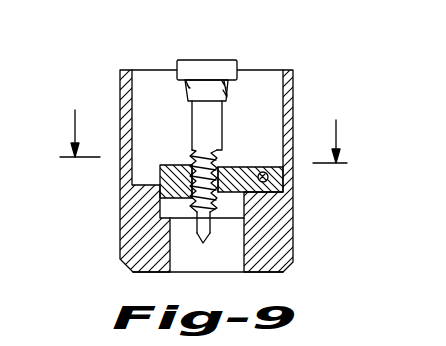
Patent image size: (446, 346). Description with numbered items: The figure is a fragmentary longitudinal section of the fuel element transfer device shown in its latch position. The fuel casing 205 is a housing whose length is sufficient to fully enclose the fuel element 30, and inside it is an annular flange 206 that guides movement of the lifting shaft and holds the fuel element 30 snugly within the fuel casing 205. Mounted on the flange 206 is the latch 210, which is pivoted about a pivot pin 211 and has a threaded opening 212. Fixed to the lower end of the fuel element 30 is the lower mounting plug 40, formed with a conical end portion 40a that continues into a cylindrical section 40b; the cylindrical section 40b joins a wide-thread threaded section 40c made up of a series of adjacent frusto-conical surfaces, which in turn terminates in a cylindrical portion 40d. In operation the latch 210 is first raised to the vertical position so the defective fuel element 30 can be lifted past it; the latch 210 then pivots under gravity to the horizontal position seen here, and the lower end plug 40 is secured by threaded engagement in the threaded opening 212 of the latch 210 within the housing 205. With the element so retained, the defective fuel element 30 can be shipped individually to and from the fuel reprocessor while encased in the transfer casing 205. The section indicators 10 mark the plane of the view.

The section viewing direction arrows 10 is at (202, 136).
The fuel element 30 is at (205, 68).
The lower mounting plug 40 is at (171, 169).
The conical end portion 40a is at (198, 240).
The cylindrical section 40b is at (209, 226).
The threaded section 40c is at (160, 199).
The cylindrical portion 40d is at (223, 131).
The fuel casing 205 is at (289, 96).
The annular flange 206 is at (150, 234).
The latch 210 is at (172, 165).
The pivot pin 211 is at (268, 180).
The threaded opening 212 is at (217, 168).